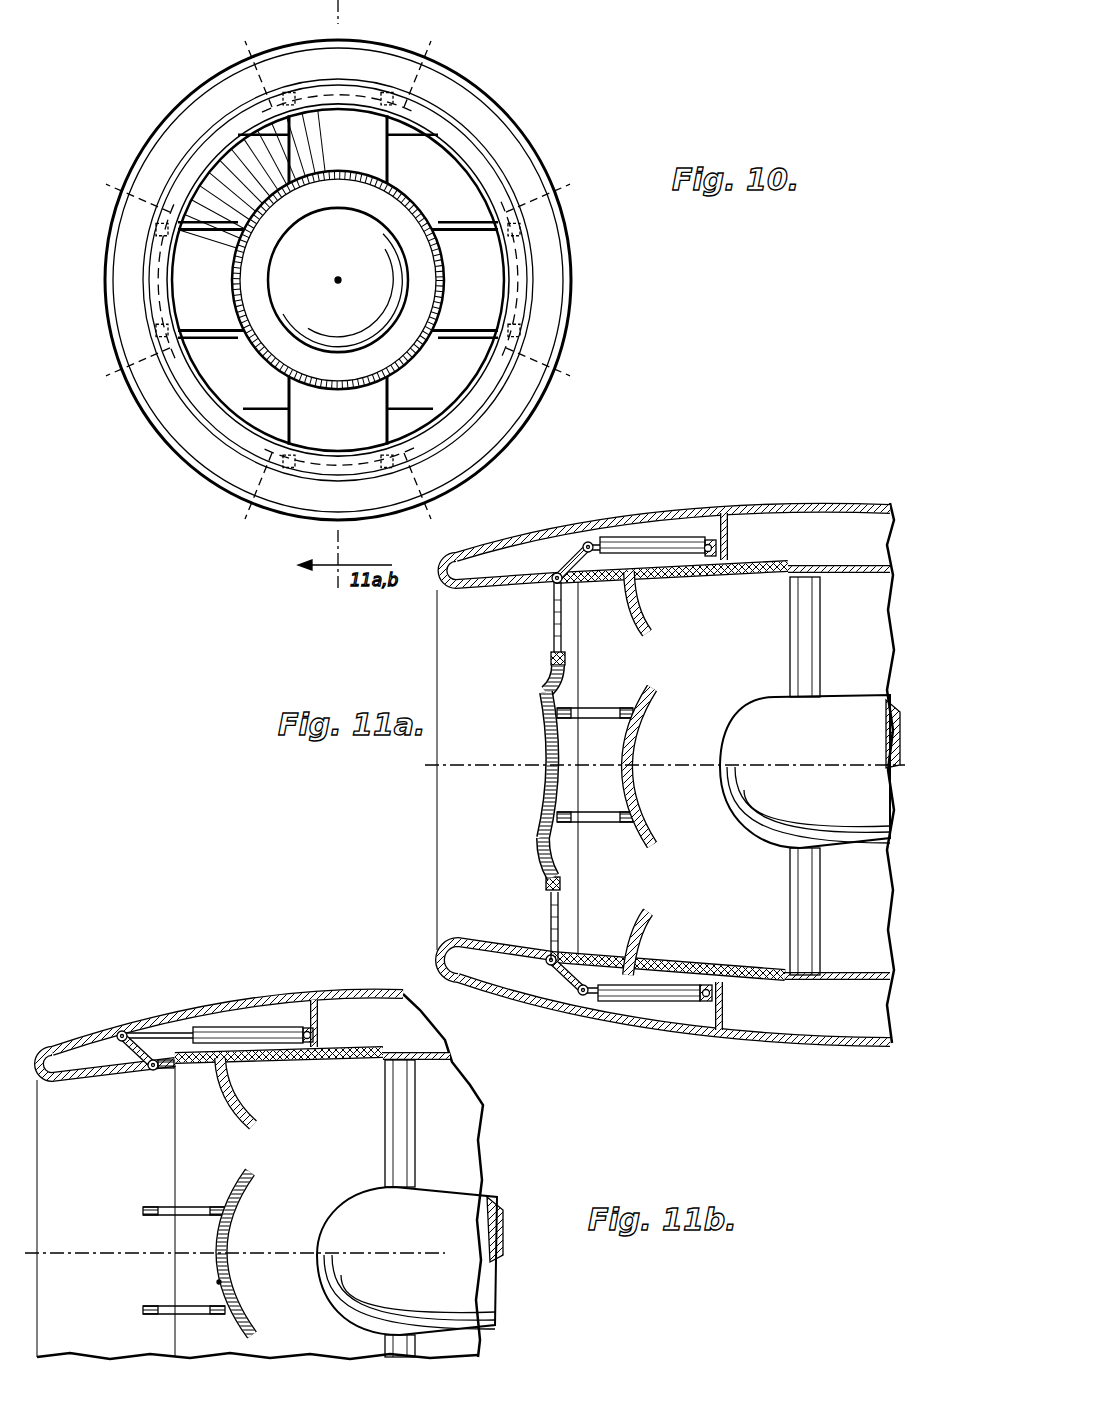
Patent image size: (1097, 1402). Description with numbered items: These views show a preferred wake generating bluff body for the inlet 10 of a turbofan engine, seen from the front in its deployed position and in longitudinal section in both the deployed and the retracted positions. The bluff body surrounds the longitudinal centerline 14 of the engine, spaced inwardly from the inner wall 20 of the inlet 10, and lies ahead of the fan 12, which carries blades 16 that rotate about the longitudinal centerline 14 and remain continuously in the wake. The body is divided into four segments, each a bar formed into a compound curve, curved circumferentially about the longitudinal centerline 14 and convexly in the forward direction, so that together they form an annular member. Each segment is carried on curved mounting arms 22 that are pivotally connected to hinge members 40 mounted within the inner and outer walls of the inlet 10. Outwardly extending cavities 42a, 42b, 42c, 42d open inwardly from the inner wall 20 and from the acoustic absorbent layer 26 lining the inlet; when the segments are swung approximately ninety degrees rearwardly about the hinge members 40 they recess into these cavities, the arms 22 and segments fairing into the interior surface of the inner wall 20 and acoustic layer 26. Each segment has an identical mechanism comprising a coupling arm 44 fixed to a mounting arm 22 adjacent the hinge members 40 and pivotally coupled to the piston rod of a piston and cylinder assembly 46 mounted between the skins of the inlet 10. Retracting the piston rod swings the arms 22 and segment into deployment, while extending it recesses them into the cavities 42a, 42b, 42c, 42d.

In FIG. 10, the inlet 10 is at (500, 100).
In FIG. 11A, the inlet 10 is at (678, 522).
In FIG. 11B, the inlet 10 is at (279, 993).
In FIG. 10, the fan 12 is at (356, 348).
In FIG. 11A, the fan 12 is at (756, 706).
In FIG. 11B, the fan 12 is at (370, 1189).
In FIG. 10, the longitudinal centerline 14 is at (340, 278).
In FIG. 11A, the longitudinal centerline 14 is at (452, 765).
In FIG. 11B, the longitudinal centerline 14 is at (55, 1253).
In FIG. 10, the blades 16 is at (318, 203).
In FIG. 11A, the blades 16 is at (815, 668).
In FIG. 11B, the blades 16 is at (408, 1137).
In FIG. 11A, the inner wall 20 is at (458, 598).
In FIG. 11B, the inner wall 20 is at (65, 1090).
In FIG. 10, the arms 22 is at (232, 140).
In FIG. 11A, the arms 22 is at (553, 622).
In FIG. 11B, the arms 22 is at (195, 1207).
In FIG. 11A, the acoustic absorbent layer 26 is at (768, 560).
In FIG. 11B, the acoustic absorbent layer 26 is at (312, 1029).
In FIG. 10, the hinge members 40 is at (260, 60).
In FIG. 11A, the hinge members 40 is at (554, 574).
In FIG. 11B, the hinge members 40 is at (151, 1070).
In FIG. 10, the cavity 42a is at (418, 58).
In FIG. 11A, the cavity 42a is at (652, 605).
In FIG. 11B, the cavity 42a is at (232, 1108).
In FIG. 10, the cavity 42b is at (575, 297).
In FIG. 10, the cavity 42c is at (310, 520).
In FIG. 11A, the cavity 42c is at (655, 928).
In FIG. 10, the cavity 42d is at (120, 315).
In FIG. 11A, the cavity 42d is at (640, 742).
In FIG. 11B, the cavity 42d is at (215, 1283).
In FIG. 11A, the coupling arm 44 is at (586, 542).
In FIG. 11B, the coupling arm 44 is at (117, 1036).
In FIG. 11A, the piston and cylinder assembly 46 is at (685, 543).
In FIG. 11B, the piston and cylinder assembly 46 is at (289, 1025).